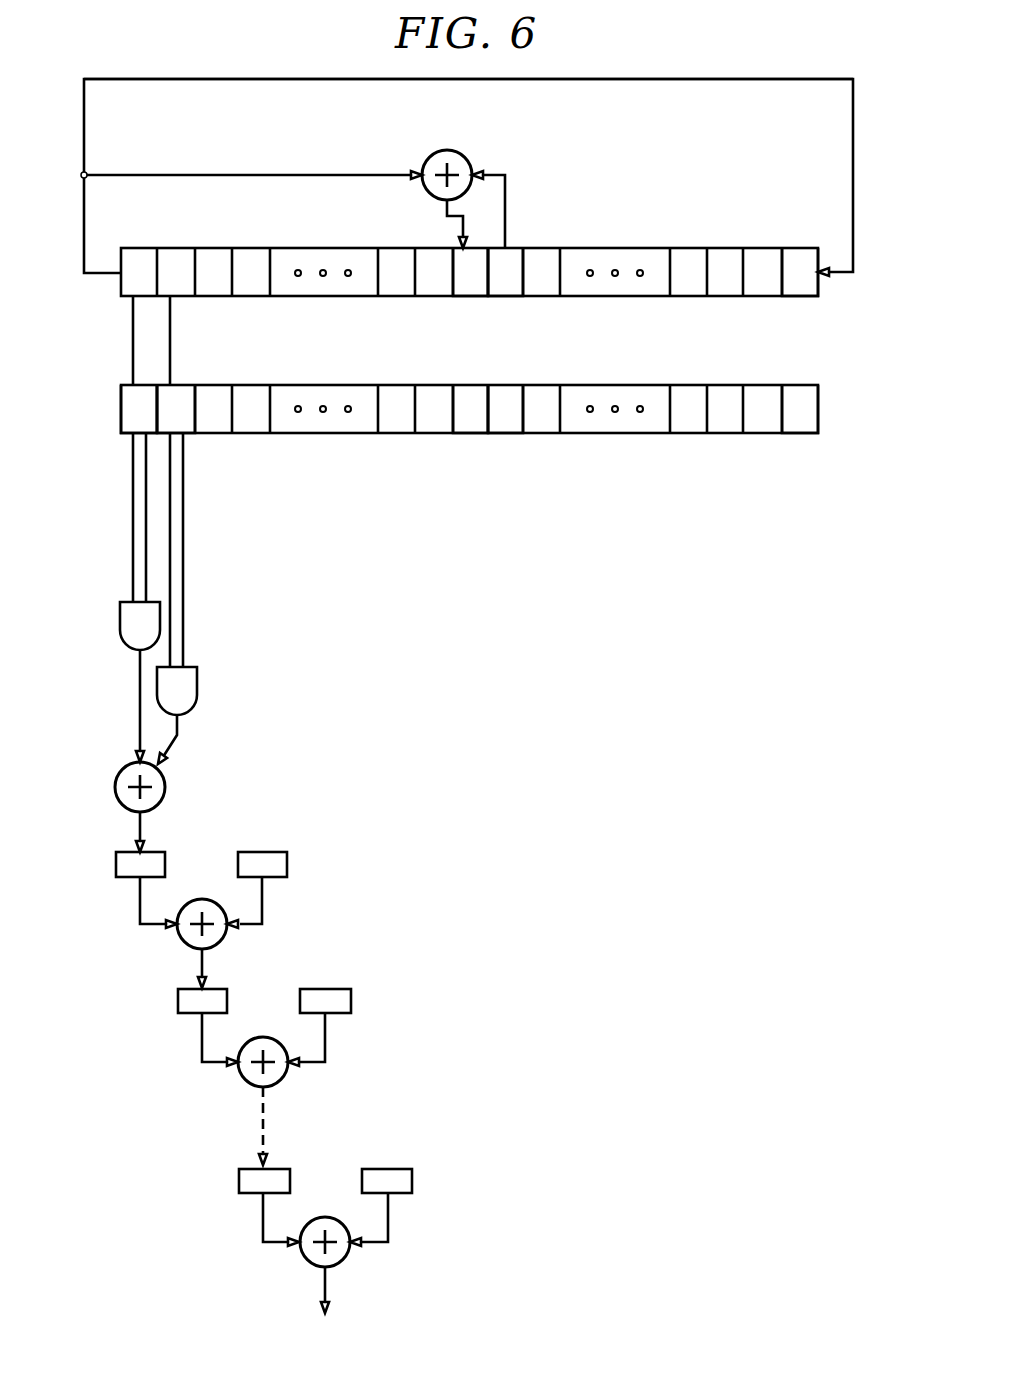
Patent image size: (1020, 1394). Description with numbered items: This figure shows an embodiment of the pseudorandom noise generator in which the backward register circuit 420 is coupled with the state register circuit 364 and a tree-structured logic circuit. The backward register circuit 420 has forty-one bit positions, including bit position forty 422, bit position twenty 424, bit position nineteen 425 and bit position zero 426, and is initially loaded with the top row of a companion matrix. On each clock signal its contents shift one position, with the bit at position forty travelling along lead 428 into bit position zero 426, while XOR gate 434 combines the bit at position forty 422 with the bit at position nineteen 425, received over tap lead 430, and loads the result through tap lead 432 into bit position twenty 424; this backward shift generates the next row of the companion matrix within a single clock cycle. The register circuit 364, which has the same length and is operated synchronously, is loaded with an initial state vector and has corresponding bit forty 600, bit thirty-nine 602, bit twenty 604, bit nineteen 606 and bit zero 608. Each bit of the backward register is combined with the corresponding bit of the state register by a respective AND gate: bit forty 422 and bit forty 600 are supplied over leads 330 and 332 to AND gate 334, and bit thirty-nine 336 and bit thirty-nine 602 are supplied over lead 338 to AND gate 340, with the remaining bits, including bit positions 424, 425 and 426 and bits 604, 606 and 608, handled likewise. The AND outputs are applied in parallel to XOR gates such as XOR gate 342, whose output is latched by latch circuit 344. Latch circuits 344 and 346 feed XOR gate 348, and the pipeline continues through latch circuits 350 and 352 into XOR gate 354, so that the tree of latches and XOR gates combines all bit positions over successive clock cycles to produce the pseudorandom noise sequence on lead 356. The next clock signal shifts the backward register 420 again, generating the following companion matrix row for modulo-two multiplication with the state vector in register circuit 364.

The backward register circuit 420 is at (763, 57).
The lead 428 is at (263, 78).
The XOR gate 434 is at (440, 150).
The tap lead 430 is at (506, 212).
The tap lead 432 is at (447, 208).
The bit position 40 422 is at (139, 248).
The bit position 20 424 is at (470, 297).
The bit position 19 425 is at (505, 297).
The bit position 0 426 is at (800, 297).
The lead 330 is at (133, 340).
The lead 332 is at (146, 580).
The lead 336 is at (170, 340).
The lead 338 is at (183, 630).
The register circuit 364 is at (580, 473).
The bit 40 600 is at (128, 436).
The bit 39 602 is at (183, 436).
The bit 20 604 is at (470, 434).
The bit 19 606 is at (503, 434).
The bit 0 608 is at (800, 434).
The AND gate 334 is at (133, 655).
The AND gate 340 is at (197, 690).
The XOR gate 342 is at (115, 788).
The latch circuit 344 is at (130, 880).
The latch circuit 346 is at (262, 851).
The XOR gate 348 is at (183, 947).
The latch circuit 350 is at (239, 1185).
The latch circuit 352 is at (400, 1169).
The XOR gate 354 is at (310, 1262).
The lead 356 is at (330, 1280).